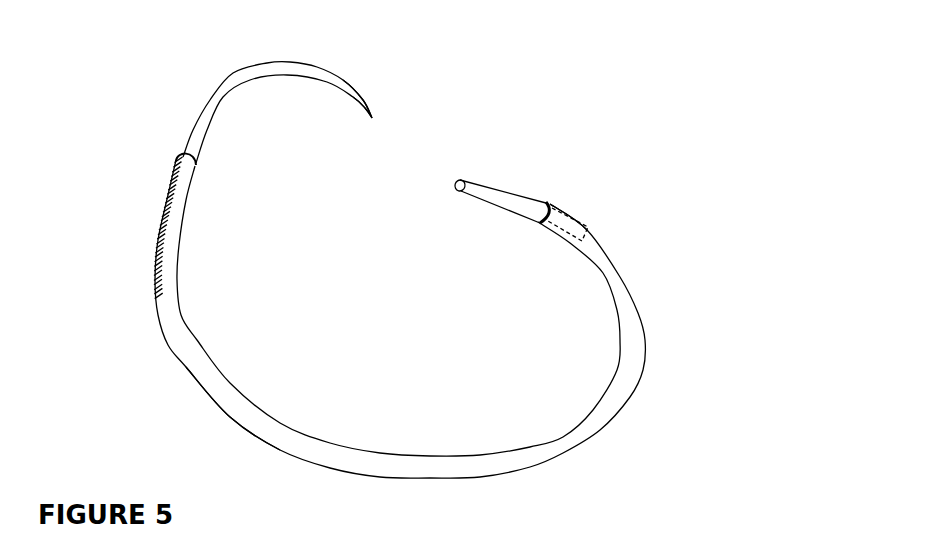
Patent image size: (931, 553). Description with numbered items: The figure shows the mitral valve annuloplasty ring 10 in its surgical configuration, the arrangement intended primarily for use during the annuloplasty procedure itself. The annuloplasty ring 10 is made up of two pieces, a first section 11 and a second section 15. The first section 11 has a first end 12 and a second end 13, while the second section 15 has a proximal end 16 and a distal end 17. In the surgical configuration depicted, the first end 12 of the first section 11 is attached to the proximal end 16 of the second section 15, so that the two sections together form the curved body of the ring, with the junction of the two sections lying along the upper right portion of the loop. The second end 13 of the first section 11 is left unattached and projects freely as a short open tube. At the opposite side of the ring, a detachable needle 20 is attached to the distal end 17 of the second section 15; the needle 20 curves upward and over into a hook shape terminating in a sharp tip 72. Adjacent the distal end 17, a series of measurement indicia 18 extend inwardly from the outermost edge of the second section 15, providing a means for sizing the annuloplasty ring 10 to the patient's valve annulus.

The annuloplasty ring 10 is at (678, 308).
The first section 11 is at (520, 195).
The first end 12 is at (592, 228).
The second end 13 is at (470, 186).
The second section 15 is at (185, 363).
The proximal end 16 is at (568, 216).
The distal end 17 is at (170, 182).
The measurement indicia 18 is at (152, 250).
The detachable needle 20 is at (200, 117).
The tip 72 is at (360, 97).